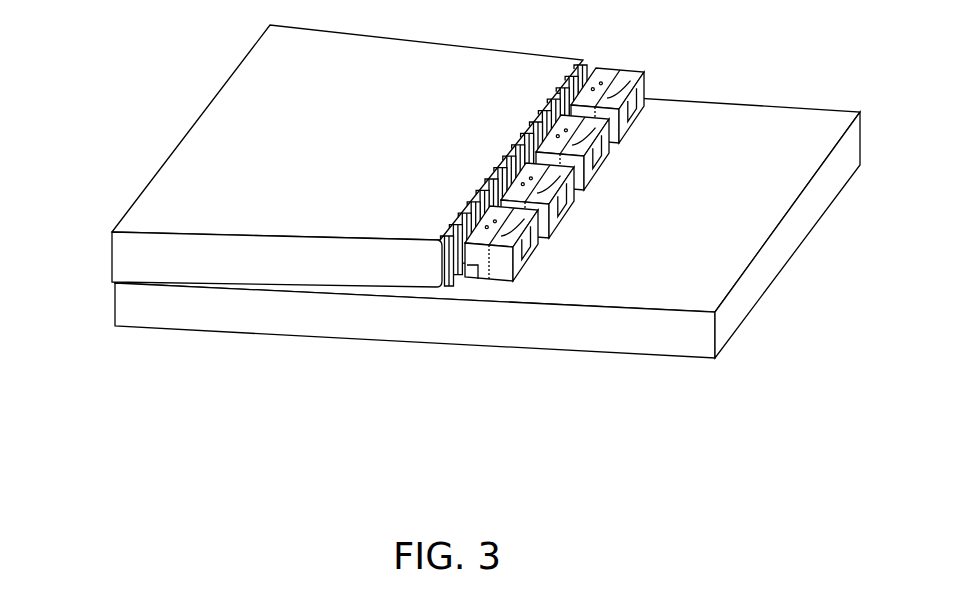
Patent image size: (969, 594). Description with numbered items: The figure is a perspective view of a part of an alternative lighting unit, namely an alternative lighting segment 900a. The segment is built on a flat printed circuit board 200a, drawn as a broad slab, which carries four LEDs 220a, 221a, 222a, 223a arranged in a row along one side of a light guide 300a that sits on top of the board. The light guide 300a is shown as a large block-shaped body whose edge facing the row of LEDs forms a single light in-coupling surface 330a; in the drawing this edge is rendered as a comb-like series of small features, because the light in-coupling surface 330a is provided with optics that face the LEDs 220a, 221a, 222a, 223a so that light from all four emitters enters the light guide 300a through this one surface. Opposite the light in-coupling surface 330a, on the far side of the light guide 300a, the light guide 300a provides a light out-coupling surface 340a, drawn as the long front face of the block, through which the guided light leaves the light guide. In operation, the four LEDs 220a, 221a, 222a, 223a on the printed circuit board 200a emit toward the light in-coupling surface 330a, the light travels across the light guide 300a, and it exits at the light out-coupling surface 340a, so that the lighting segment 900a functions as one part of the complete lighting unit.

The lighting segment 900a is at (477, 190).
The printed circuit board 200a is at (792, 166).
The light guide 300a is at (300, 156).
The light out-coupling surface 340a is at (133, 262).
The light in-coupling surface 330a is at (588, 63).
The LED 220a is at (540, 232).
The LED 221a is at (576, 183).
The LED 222a is at (612, 130).
The LED 223a is at (643, 76).